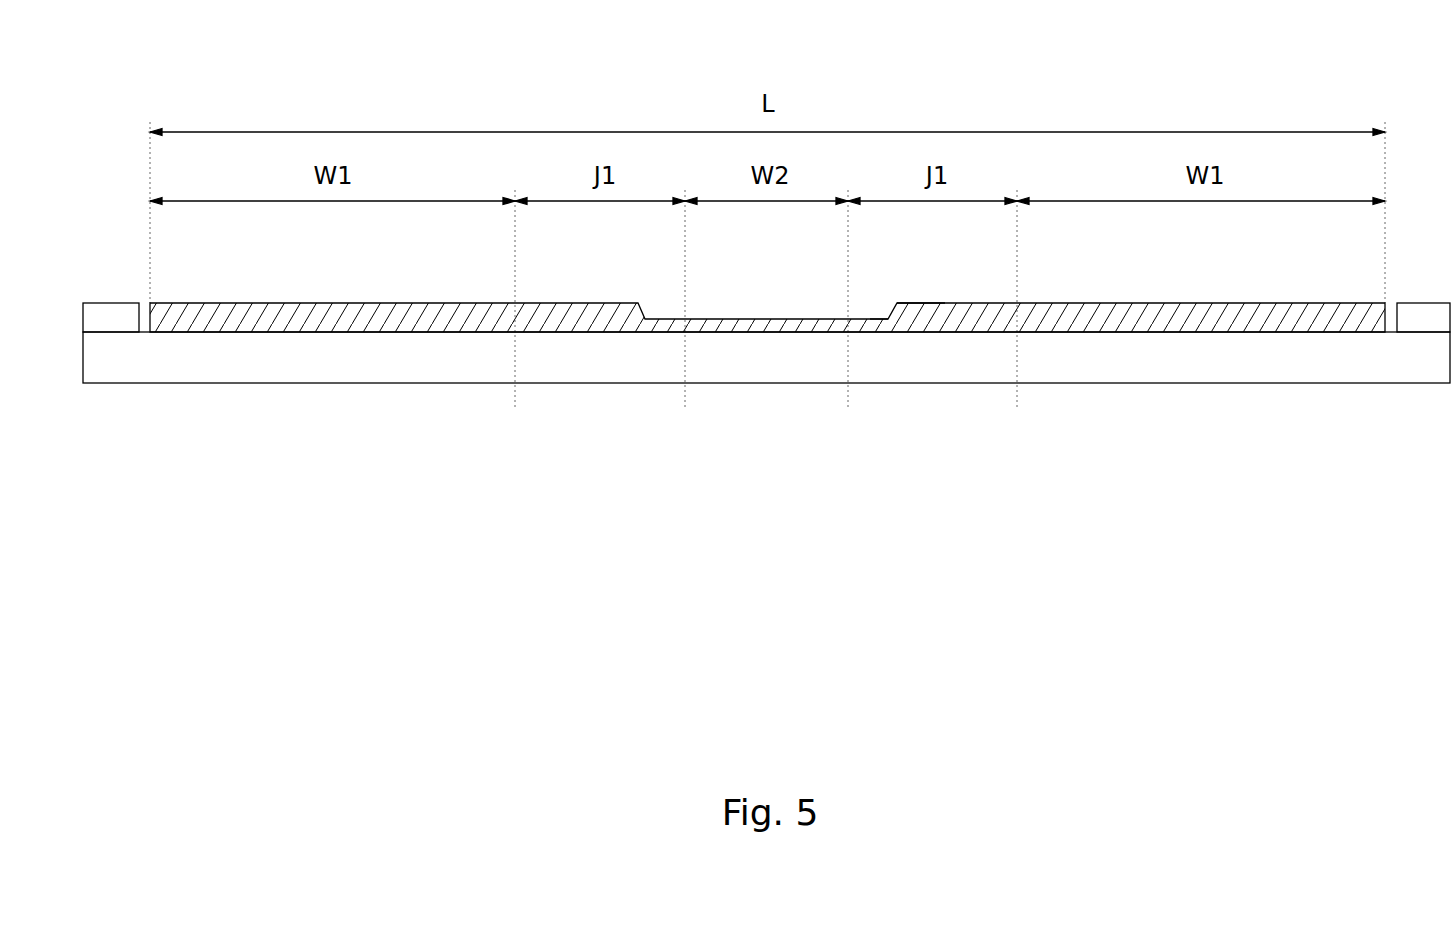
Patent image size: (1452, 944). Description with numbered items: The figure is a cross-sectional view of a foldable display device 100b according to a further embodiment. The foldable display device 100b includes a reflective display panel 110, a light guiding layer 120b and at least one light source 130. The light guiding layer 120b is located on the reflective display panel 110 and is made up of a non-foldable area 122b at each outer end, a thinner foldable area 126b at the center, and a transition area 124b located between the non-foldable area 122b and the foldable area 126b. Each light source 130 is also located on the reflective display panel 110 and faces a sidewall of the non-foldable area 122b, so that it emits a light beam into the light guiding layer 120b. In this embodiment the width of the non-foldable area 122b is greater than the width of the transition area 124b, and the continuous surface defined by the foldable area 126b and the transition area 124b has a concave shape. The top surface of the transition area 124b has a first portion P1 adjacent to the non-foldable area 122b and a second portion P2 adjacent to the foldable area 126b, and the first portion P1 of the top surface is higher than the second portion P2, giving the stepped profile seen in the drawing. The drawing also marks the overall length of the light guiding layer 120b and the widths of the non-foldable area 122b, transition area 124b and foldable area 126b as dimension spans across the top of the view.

The foldable display device 100b is at (1392, 85).
The reflective display panel 110 is at (1210, 373).
The light source 130 is at (114, 306).
The light guiding layer 120b is at (767, 435).
The non-foldable area 122b is at (420, 345).
The transition area 124b is at (610, 345).
The foldable area 126b is at (766, 418).
The first portion P1 is at (936, 288).
The second portion P2 is at (877, 304).